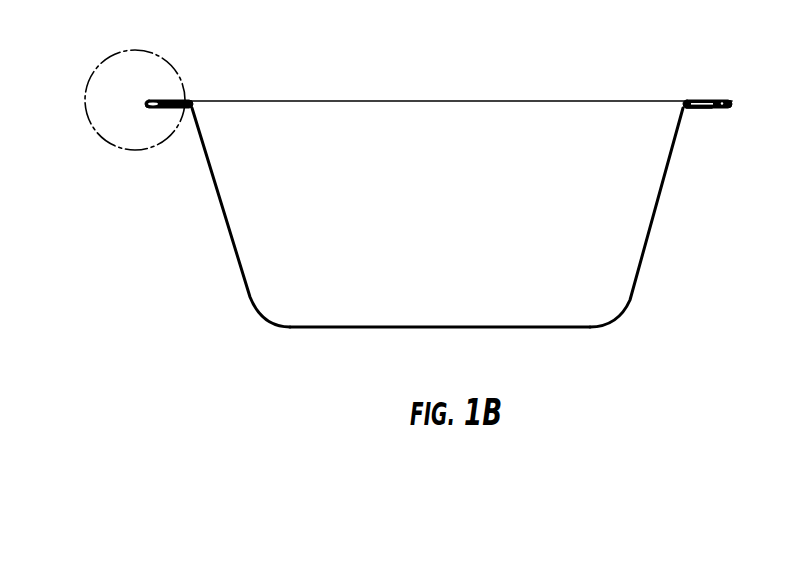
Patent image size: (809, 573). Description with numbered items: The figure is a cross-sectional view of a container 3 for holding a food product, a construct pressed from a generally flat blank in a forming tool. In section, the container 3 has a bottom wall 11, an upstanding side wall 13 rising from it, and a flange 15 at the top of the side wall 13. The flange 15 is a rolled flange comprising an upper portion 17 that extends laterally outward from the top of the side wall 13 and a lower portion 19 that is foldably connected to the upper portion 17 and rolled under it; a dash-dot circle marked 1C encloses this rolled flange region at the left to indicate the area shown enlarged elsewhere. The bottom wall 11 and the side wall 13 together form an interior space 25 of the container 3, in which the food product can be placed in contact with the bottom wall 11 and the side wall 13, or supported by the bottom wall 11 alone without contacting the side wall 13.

The container 3 is at (186, 212).
The bottom wall 11 is at (340, 329).
The side wall 13 is at (637, 268).
The flange 15 is at (737, 96).
The upper portion 17 is at (702, 99).
The lower portion 19 is at (700, 109).
The interior space 25 is at (423, 187).
The detail view circle 1C is at (85, 108).